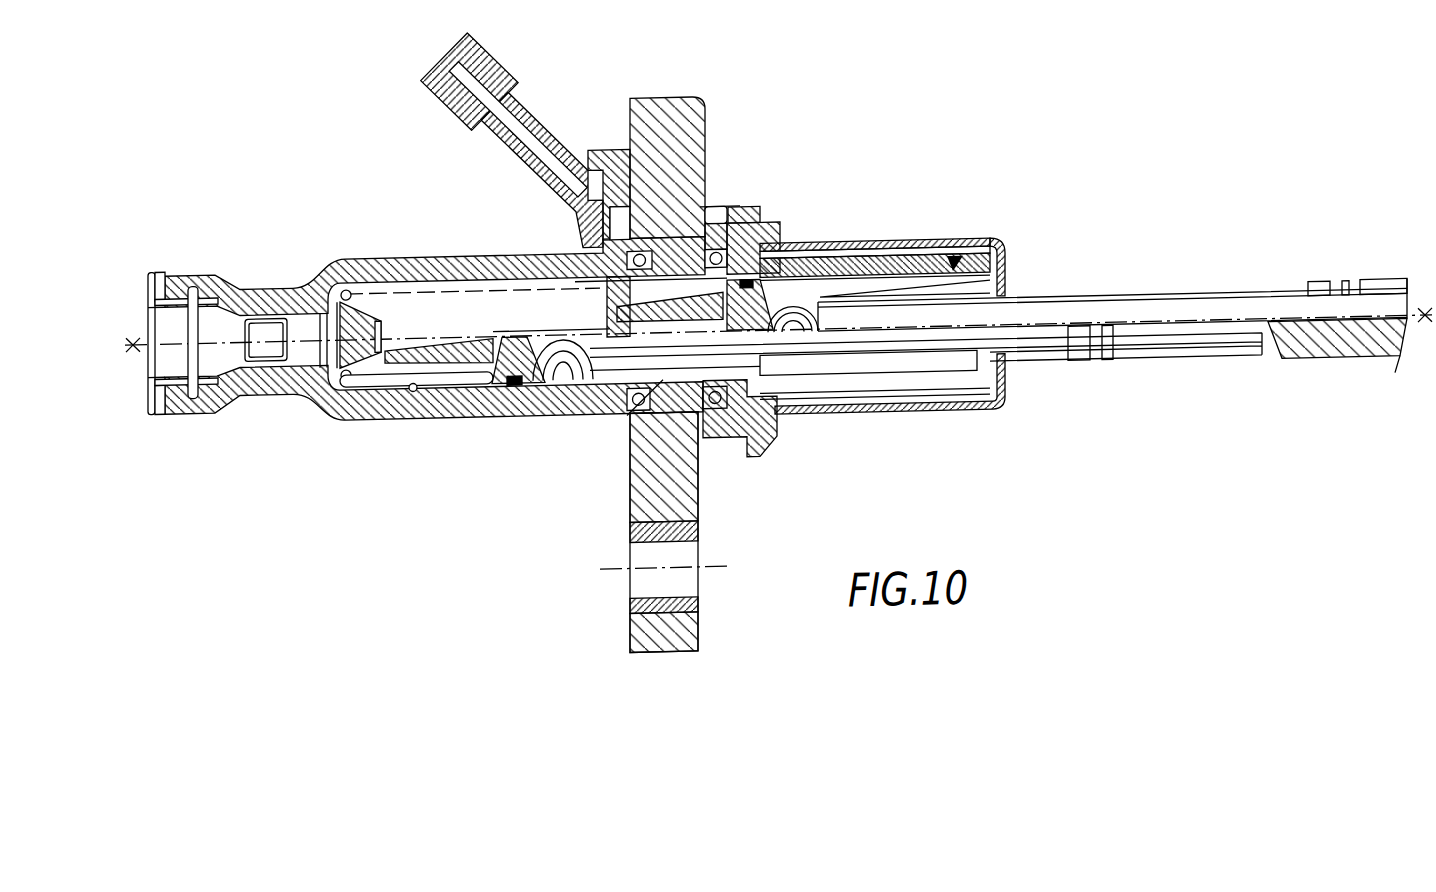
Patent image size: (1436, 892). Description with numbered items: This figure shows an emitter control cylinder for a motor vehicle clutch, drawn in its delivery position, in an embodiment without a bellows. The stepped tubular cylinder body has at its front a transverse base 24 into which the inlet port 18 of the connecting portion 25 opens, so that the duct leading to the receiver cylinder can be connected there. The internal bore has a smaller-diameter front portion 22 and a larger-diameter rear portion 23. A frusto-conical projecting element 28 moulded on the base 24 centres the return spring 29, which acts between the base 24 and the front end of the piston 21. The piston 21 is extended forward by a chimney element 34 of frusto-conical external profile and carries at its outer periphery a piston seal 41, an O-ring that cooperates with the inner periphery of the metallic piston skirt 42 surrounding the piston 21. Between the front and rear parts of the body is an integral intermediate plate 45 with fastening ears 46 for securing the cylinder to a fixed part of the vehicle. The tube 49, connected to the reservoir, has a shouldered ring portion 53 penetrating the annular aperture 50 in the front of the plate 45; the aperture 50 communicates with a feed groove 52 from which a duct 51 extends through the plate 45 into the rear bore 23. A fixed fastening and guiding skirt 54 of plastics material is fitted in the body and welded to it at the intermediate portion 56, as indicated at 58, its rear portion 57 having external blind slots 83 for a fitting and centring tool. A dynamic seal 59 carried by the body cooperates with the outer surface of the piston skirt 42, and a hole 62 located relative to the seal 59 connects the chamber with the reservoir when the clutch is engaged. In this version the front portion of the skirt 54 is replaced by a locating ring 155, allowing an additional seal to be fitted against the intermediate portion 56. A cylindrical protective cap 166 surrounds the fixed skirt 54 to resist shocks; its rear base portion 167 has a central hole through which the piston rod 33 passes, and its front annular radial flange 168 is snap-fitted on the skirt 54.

The connecting portion 25 is at (207, 272).
The inlet port 18 is at (305, 325).
The frusto-conical projecting element 28 is at (362, 267).
The return spring 29 is at (437, 270).
The front portion of the internal bore 22 is at (459, 298).
The hole 62 is at (605, 305).
The tube 49 is at (537, 117).
The shouldered ring portion 53 is at (588, 173).
The aperture 50 is at (617, 218).
The intermediate plate 45 is at (664, 110).
The feed groove 52 is at (677, 143).
The duct 51 is at (712, 208).
The ultrasonic weld 58 is at (715, 240).
The intermediate portion 56 is at (745, 240).
The annular radial flange 168 is at (782, 252).
The rear portion 57 is at (868, 280).
The protective cap 166 is at (912, 262).
The fastening and guiding skirt 54 is at (978, 262).
The base portion 167 is at (1013, 279).
The piston rod 33 is at (1200, 325).
The transverse base 24 is at (327, 375).
The chimney element 34 is at (380, 376).
The piston skirt 42 is at (422, 396).
The piston 21 is at (448, 385).
The piston seal 41 is at (516, 394).
The dynamic seal 59 is at (627, 427).
The locating ring 155 is at (667, 420).
The fastening ears 46 is at (653, 517).
The rear portion of the internal bore 23 is at (750, 474).
The external blind slots 83 is at (908, 405).